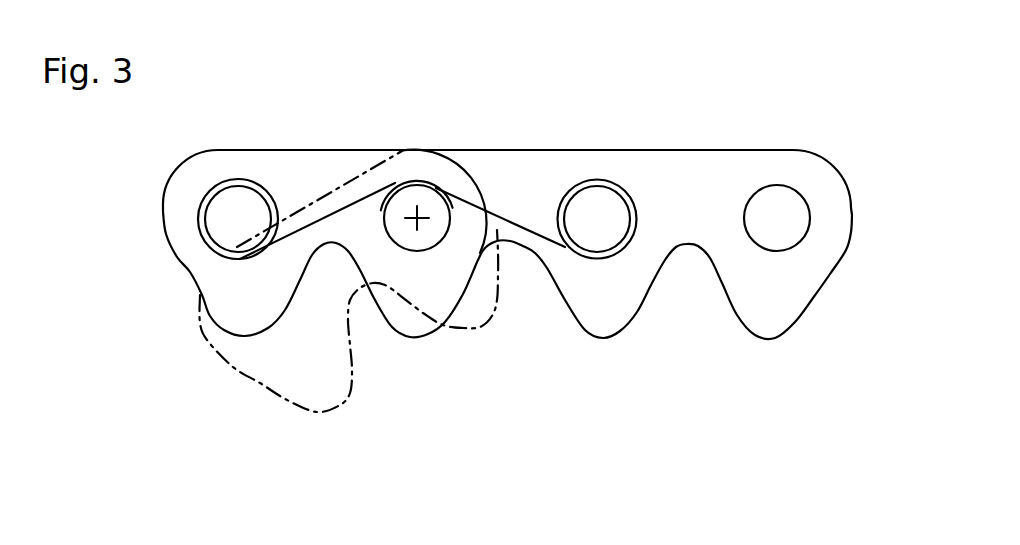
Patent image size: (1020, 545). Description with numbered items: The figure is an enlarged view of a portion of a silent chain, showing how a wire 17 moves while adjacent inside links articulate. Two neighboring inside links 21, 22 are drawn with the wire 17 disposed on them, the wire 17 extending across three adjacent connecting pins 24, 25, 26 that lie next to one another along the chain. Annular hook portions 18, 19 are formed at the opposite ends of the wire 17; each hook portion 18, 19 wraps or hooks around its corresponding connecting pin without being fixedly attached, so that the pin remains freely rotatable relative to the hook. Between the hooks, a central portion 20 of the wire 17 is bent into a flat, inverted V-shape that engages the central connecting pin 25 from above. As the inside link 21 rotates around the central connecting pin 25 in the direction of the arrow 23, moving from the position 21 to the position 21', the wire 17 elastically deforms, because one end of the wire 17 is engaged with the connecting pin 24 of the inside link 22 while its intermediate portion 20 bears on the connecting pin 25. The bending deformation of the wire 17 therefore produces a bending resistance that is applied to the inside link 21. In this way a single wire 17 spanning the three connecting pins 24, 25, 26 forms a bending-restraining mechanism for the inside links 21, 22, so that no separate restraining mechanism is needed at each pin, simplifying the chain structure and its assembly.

The wire 17 is at (558, 243).
The annular hook portion 18 is at (223, 187).
The annular hook portion 19 is at (637, 200).
The central portion 20 is at (420, 182).
The inside link 21 is at (363, 151).
The position of inside link 21' is at (348, 281).
The inside link 22 is at (708, 137).
The arrow 23 is at (307, 387).
The connecting pin 24 is at (595, 198).
The central connecting pin 25 is at (432, 202).
The connecting pin 26 is at (224, 219).